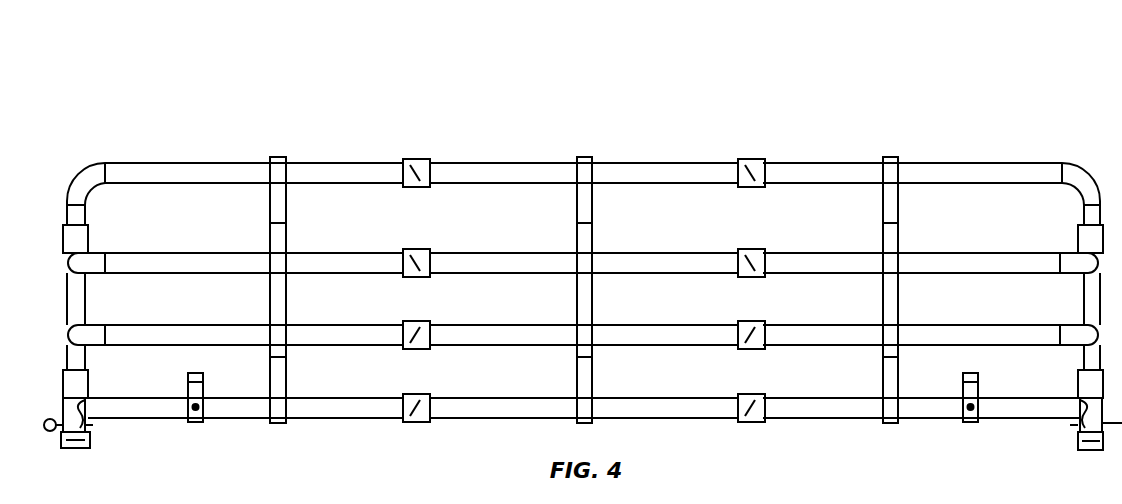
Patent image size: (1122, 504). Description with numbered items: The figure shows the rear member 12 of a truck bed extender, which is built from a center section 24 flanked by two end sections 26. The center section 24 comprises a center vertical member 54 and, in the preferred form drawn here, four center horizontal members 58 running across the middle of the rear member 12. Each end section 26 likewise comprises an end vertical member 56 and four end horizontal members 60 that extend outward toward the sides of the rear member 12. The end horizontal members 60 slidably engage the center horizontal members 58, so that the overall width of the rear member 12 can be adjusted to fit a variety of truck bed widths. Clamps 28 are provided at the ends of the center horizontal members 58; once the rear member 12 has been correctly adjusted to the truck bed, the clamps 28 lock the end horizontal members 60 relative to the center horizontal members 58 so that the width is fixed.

The rear member 12 is at (366, 84).
The center section 24 is at (755, 107).
The end section 26 is at (418, 133).
The clamp 28 is at (402, 252).
The center vertical member 54 is at (585, 177).
The end vertical member 56 is at (280, 178).
The center horizontal member 58 is at (487, 170).
The end horizontal member 60 is at (338, 183).